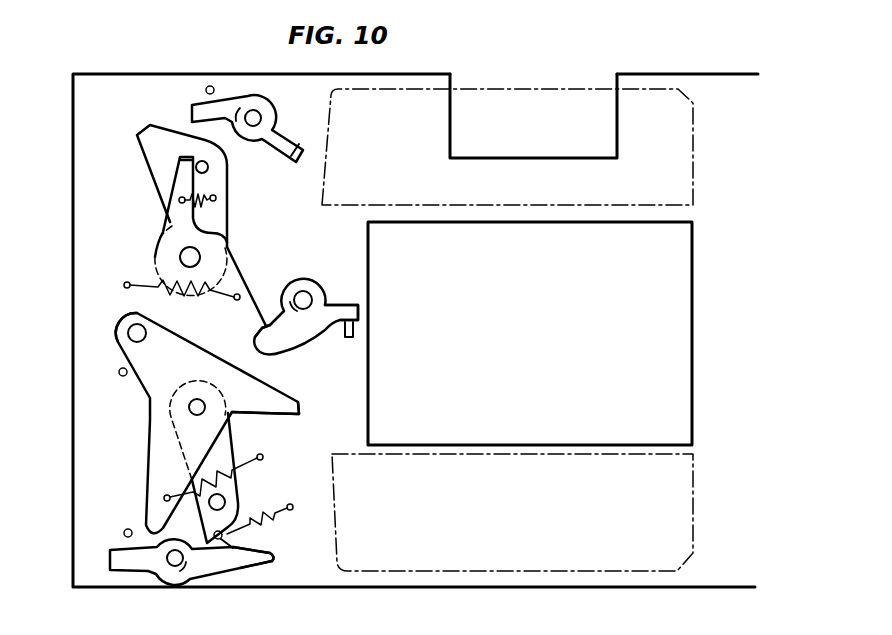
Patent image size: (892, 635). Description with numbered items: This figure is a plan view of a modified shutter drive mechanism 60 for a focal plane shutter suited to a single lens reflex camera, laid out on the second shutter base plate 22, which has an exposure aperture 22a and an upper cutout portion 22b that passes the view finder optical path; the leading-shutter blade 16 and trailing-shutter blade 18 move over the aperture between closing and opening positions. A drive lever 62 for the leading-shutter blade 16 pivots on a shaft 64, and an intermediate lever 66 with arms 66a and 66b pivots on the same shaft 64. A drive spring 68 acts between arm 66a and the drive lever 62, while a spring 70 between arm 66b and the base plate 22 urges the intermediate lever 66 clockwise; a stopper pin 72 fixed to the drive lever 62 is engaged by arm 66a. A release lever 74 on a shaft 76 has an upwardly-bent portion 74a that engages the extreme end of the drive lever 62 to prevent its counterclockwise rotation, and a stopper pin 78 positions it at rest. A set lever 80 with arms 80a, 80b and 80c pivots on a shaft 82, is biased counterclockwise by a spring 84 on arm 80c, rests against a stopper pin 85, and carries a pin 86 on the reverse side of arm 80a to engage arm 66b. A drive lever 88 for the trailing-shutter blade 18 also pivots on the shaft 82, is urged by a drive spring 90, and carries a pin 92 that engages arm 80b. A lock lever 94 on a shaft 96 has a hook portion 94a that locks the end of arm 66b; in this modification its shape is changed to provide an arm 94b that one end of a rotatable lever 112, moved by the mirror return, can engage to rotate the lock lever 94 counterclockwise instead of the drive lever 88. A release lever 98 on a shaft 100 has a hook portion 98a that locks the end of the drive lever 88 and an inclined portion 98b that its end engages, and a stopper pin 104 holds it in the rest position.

The leading-shutter blade 16 is at (506, 82).
The trailing-shutter blade 18 is at (693, 545).
The second shutter base plate 22 is at (698, 73).
The exposure aperture 22a is at (692, 335).
The cutout portion 22b is at (617, 120).
The shutter drive mechanism 60 is at (120, 160).
The drive lever 62 is at (143, 133).
The shaft 64 is at (181, 251).
The intermediate lever 66 is at (203, 233).
The arm 66a is at (182, 172).
The arm 66b is at (236, 277).
The drive spring 68 is at (205, 198).
The spring 70 is at (148, 282).
The stopper pin 72 is at (202, 160).
The release lever 74 is at (268, 103).
The upwardly-bent portion 74a is at (305, 148).
The shaft 76 is at (261, 118).
The stopper pin 78 is at (210, 85).
The set lever 80 is at (157, 405).
The arm 80a is at (128, 331).
The arm 80b is at (296, 401).
The arm 80c is at (163, 502).
The shaft 82 is at (205, 393).
The spring 84 is at (229, 473).
The stopper pin 85 is at (121, 376).
The pin 86 is at (132, 320).
The drive lever 88 is at (226, 500).
The drive spring 90 is at (270, 522).
The pin 92 is at (240, 504).
The lock lever 94 is at (302, 280).
The hook portion 94a is at (254, 330).
The arm 94b is at (352, 306).
The shaft 96 is at (310, 294).
The release lever 98 is at (202, 572).
The hook portion 98a is at (222, 544).
The inclined portion 98b is at (238, 540).
The shaft 100 is at (170, 562).
The stopper pin 104 is at (124, 533).
The rotatable lever 112 is at (353, 331).